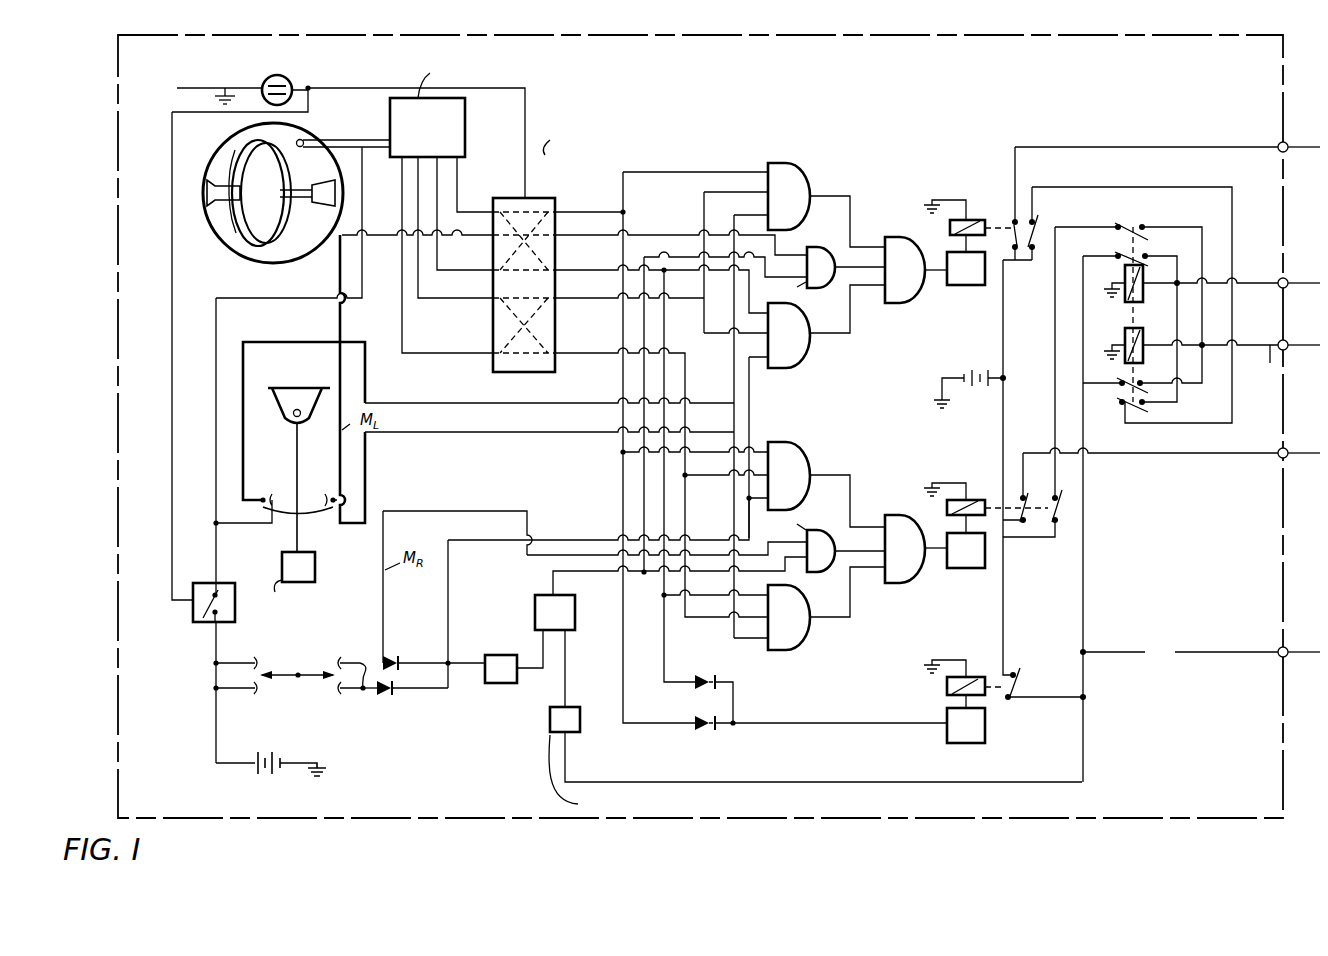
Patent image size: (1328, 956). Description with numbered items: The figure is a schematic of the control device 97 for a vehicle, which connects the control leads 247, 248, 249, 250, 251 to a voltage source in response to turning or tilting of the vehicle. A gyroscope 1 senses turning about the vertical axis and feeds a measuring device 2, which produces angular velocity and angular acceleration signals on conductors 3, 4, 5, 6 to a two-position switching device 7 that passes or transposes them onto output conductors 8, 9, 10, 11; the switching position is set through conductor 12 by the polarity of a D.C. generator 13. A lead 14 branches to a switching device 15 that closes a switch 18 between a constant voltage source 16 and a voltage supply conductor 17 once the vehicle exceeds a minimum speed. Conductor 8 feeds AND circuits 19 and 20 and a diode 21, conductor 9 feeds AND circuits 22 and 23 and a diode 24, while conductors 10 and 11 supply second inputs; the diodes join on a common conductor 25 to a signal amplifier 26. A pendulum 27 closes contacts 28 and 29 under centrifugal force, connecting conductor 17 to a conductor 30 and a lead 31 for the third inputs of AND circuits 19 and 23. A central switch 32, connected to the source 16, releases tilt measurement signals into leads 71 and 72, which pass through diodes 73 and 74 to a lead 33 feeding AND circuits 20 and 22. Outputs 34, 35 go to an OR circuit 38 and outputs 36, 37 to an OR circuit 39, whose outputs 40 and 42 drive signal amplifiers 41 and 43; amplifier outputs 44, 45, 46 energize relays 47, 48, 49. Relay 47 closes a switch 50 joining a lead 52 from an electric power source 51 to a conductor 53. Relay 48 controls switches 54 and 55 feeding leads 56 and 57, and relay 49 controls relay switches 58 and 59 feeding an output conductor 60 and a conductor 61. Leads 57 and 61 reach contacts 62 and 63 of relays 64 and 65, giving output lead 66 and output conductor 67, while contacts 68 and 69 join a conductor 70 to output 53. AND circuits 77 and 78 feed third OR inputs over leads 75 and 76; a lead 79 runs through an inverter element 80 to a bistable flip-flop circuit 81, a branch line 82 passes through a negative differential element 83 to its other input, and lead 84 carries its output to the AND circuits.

The gyroscope 1 is at (258, 212).
The measuring device 2 is at (455, 122).
The conductor 3 is at (482, 212).
The conductor 4 is at (472, 270).
The conductor 5 is at (468, 298).
The conductor 6 is at (466, 353).
The switching device 7 is at (533, 198).
The output conductor 8 is at (585, 212).
The output conductor 9 is at (572, 270).
The output conductor 10 is at (573, 298).
The output conductor 11 is at (572, 353).
The conductor 12 is at (525, 103).
The D.C. generator 13 is at (236, 82).
The electrical lead 14 is at (172, 452).
The switching device 15 is at (205, 580).
The constant voltage source 16 is at (284, 755).
The voltage supply conductor 17 is at (218, 550).
The switch 18 is at (195, 618).
The AND circuit 19 is at (768, 168).
The AND circuit 20 is at (800, 455).
The diode 21 is at (708, 733).
The AND circuit 22 is at (800, 368).
The AND circuit 23 is at (800, 645).
The diode 24 is at (706, 672).
The common conductor 25 is at (838, 723).
The signal amplifier 26 is at (947, 735).
The pendulum 27 is at (315, 580).
The contact 28 is at (265, 495).
The contact 29 is at (330, 495).
The conductor 30 is at (449, 400).
The lead 31 is at (488, 435).
The central switch 32 is at (293, 670).
The lead 33 is at (503, 540).
The output 34 is at (830, 195).
The output 35 is at (850, 315).
The output 36 is at (830, 475).
The output 37 is at (850, 605).
The OR circuit 38 is at (907, 303).
The OR circuit 39 is at (907, 583).
The output 40 is at (947, 255).
The signal amplifier 41 is at (950, 285).
The output 42 is at (947, 533).
The signal amplifier 43 is at (962, 568).
The output 44 is at (947, 702).
The output 45 is at (984, 238).
The output 46 is at (985, 520).
The relay 47 is at (978, 672).
The relay 48 is at (978, 218).
The relay 49 is at (975, 497).
The switch 50 is at (1022, 674).
The electric power source 51 is at (975, 372).
The lead 52 is at (1012, 418).
The conductor 53 is at (1210, 655).
The switch 54 is at (1015, 220).
The relay switch 55 is at (1037, 243).
The lead 56 is at (1080, 147).
The lead 57 is at (1235, 223).
The relay switch 58 is at (1030, 497).
The relay switch 59 is at (1060, 525).
The output conductor 60 is at (1205, 453).
The conductor 61 is at (1057, 418).
The contact 62 is at (1128, 405).
The contact 63 is at (1135, 227).
The relay 64 is at (1125, 335).
The relay 65 is at (1143, 300).
The output lead 66 is at (1243, 283).
The output conductor 67 is at (1272, 364).
The contact 68 is at (1145, 246).
The contact 69 is at (1133, 385).
The conductor 70 is at (1085, 497).
The lead 71 is at (372, 660).
The lead 72 is at (362, 692).
The diode 73 is at (398, 660).
The diode 74 is at (385, 697).
The lead 75 is at (866, 267).
The lead 76 is at (866, 551).
The AND circuit 77 is at (818, 247).
The AND circuit 78 is at (818, 530).
The lead 79 is at (472, 663).
The inverter element 80 is at (400, 683).
The bistable flip-flop circuit 81 is at (577, 625).
The branch line 82 is at (1084, 712).
The negative differential element 83 is at (581, 730).
The lead 84 is at (594, 571).
The control device 97 is at (116, 384).
The control lead 247 is at (1292, 648).
The control lead 248 is at (1292, 448).
The control lead 249 is at (1292, 144).
The control lead 250 is at (1292, 281).
The control lead 251 is at (1292, 341).